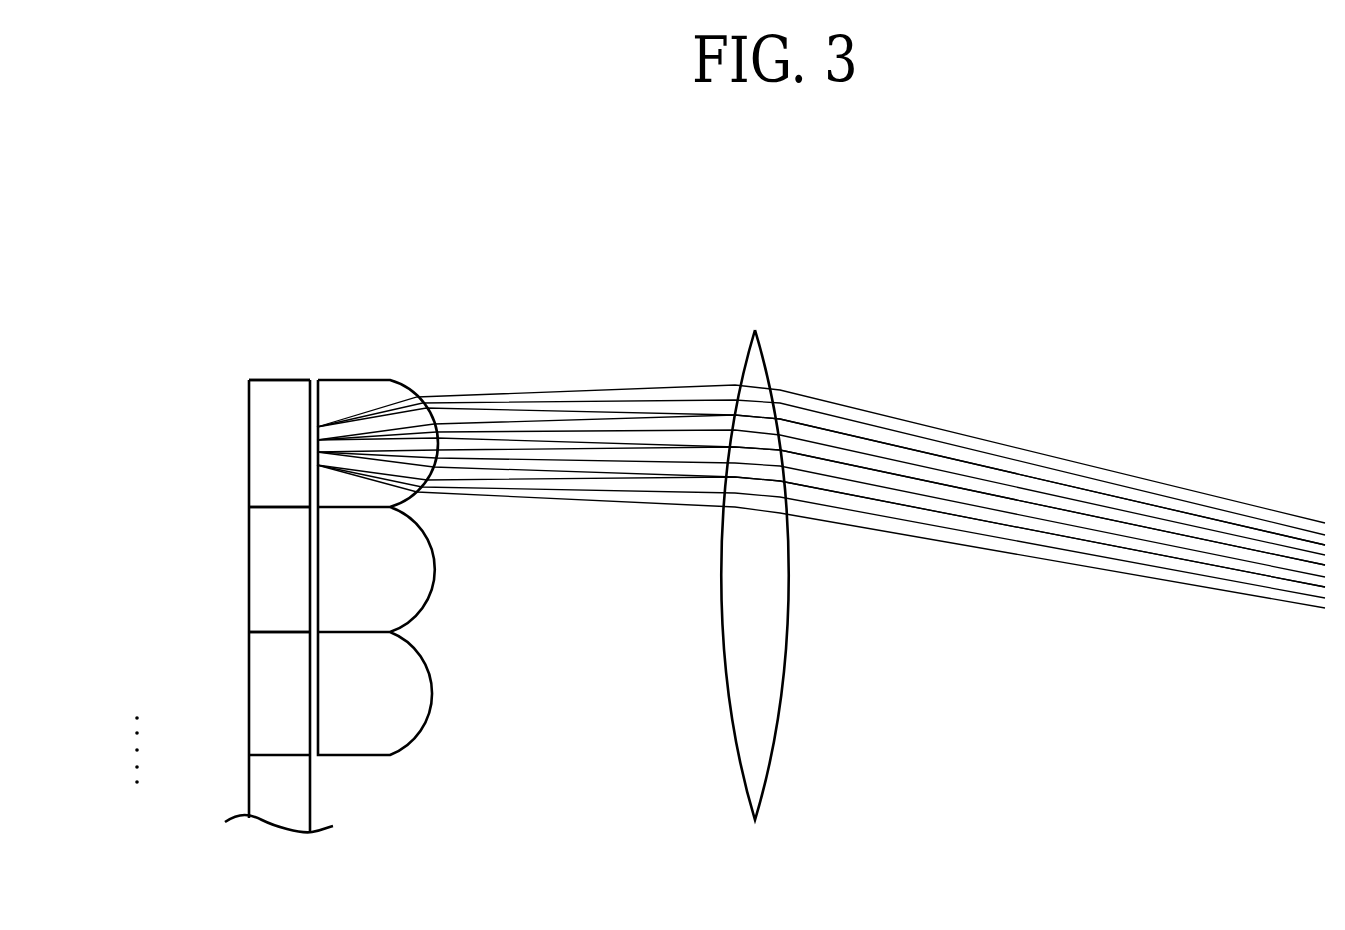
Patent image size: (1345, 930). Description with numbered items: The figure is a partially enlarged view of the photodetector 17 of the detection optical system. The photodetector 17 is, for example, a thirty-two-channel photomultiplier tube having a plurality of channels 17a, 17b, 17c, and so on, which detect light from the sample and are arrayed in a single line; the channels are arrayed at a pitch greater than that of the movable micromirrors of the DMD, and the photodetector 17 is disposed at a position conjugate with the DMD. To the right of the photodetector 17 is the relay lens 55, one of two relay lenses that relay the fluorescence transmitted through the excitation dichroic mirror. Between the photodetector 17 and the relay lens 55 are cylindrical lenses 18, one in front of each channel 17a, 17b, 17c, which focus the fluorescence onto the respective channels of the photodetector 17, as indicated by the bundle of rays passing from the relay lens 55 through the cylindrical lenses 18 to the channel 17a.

The photodetector 17 is at (281, 354).
The channel 17a is at (249, 440).
The channel 17b is at (249, 565).
The channel 17c is at (249, 688).
The cylindrical lenses 18 is at (378, 354).
The relay lens 55 is at (755, 330).